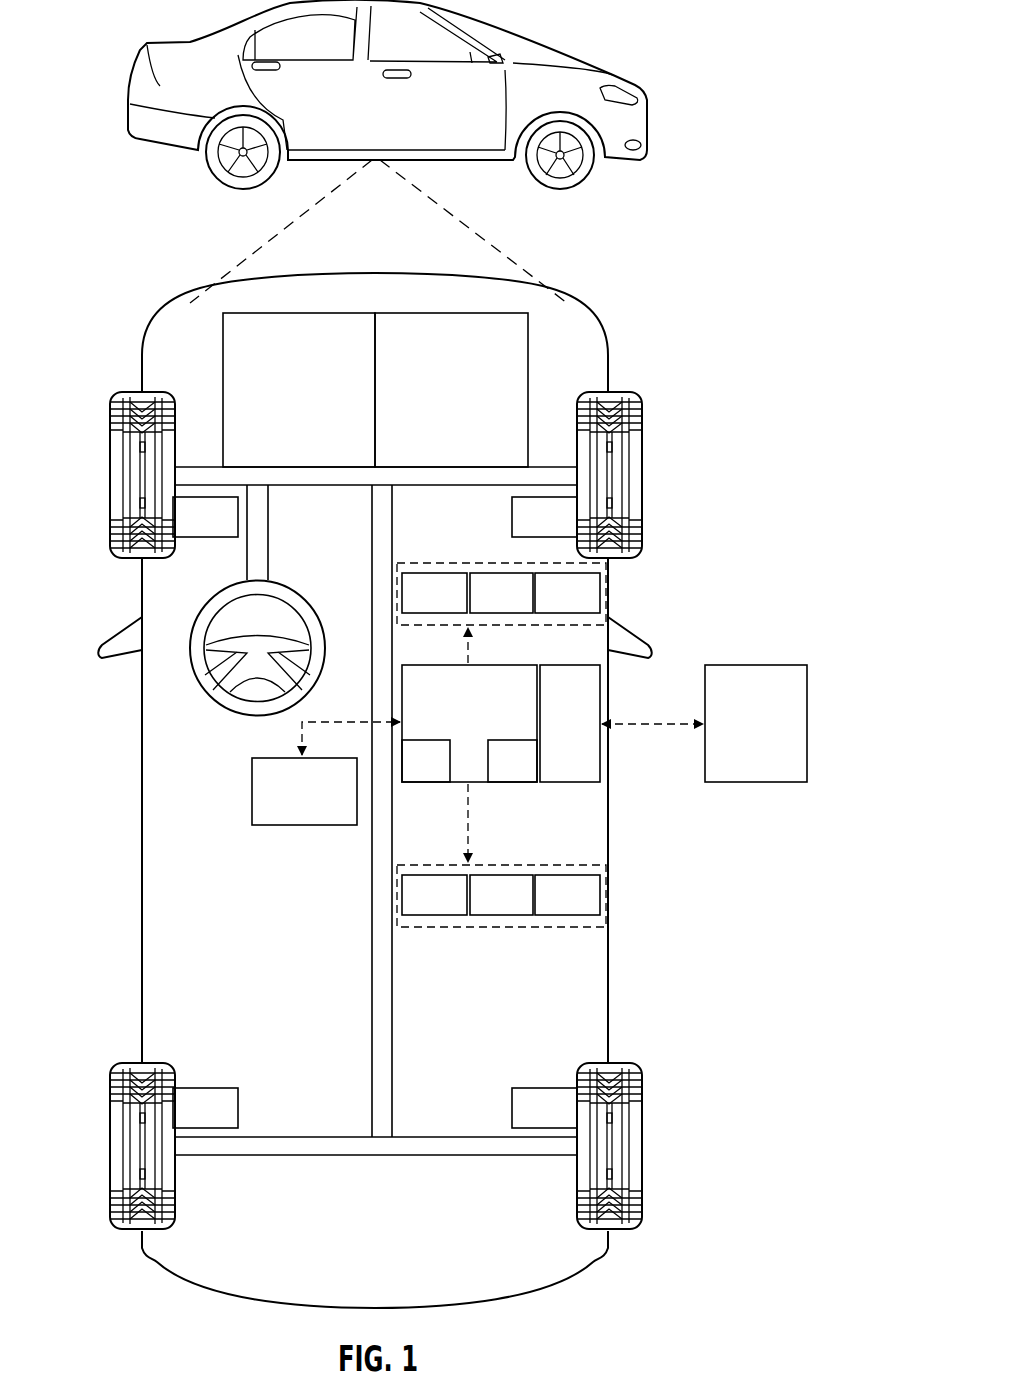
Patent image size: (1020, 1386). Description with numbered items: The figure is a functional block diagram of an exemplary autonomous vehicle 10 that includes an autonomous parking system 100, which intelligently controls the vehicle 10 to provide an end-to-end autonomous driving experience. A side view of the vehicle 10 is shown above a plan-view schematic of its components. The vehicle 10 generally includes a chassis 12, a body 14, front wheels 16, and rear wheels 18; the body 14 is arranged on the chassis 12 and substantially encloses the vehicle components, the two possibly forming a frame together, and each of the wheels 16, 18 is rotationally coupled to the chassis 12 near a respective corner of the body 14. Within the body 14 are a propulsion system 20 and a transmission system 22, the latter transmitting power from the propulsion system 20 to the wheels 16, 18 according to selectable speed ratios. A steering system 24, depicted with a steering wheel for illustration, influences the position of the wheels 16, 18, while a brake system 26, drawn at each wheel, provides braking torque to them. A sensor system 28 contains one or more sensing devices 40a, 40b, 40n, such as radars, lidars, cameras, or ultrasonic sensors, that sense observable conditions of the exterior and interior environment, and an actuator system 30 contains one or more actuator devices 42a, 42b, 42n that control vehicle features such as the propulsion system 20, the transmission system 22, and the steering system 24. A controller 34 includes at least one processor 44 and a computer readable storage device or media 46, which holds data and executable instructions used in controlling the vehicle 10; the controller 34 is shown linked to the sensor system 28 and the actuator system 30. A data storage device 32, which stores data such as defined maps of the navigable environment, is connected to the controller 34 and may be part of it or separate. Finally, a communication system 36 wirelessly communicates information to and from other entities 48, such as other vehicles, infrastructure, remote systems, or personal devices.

The autonomous vehicle 10 is at (140, 75).
The autonomous parking system 100 is at (437, 782).
The chassis 12 is at (372, 1000).
The body 14 is at (142, 860).
The front wheels 16 is at (125, 393).
The rear wheels 18 is at (118, 1229).
The propulsion system 20 is at (313, 403).
The transmission system 22 is at (465, 403).
The steering system 24 is at (278, 554).
The brake system 26 is at (218, 531).
The sensor system 28 is at (501, 578).
The actuator system 30 is at (501, 915).
The data storage device 32 is at (319, 806).
The controller 34 is at (469, 723).
The communication system 36 is at (584, 736).
The sensing device 40a is at (457, 607).
The sensing device 40b is at (524, 607).
The sensing device 40n is at (590, 607).
The actuator device 42a is at (457, 909).
The actuator device 42b is at (524, 909).
The actuator device 42n is at (590, 909).
The processor 44 is at (439, 774).
The computer readable storage device or media 46 is at (526, 774).
The other entities 48 is at (770, 736).